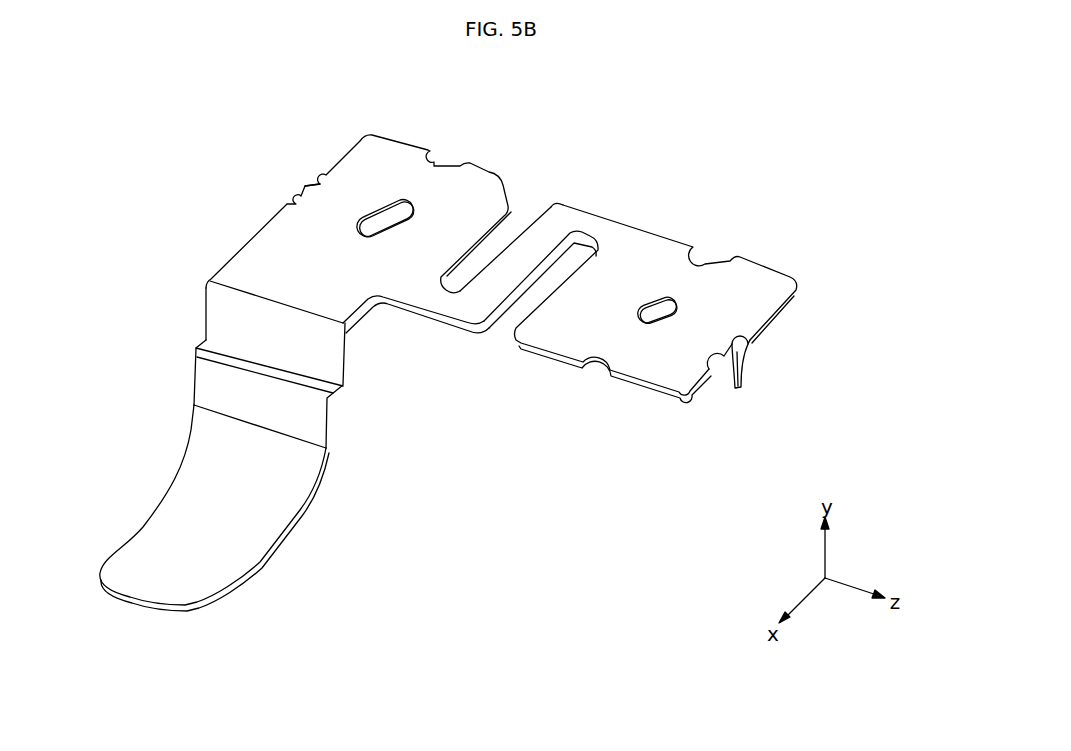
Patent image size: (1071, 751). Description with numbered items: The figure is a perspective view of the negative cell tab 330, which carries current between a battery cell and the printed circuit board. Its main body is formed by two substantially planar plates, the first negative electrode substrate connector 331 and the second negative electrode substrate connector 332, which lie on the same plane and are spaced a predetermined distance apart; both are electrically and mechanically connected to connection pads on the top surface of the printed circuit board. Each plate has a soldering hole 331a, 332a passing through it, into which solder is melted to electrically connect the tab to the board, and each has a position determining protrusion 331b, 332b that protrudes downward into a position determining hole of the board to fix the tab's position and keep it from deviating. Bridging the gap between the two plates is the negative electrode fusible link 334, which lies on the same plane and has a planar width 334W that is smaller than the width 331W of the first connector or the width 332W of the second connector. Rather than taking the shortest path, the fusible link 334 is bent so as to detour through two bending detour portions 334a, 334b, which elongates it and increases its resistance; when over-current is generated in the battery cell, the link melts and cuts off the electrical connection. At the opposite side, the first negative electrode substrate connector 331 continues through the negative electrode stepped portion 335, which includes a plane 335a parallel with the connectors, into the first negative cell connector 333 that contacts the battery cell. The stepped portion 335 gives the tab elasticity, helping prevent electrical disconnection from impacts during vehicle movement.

The negative cell tab 330 is at (860, 124).
The first negative electrode substrate connector 331 is at (356, 155).
The soldering hole 331a is at (357, 222).
The position determining protrusion 331b is at (296, 197).
The width of the first negative electrode substrate connector 331W is at (365, 136).
The second negative electrode substrate connector 332 is at (782, 313).
The soldering hole 332a is at (645, 320).
The position determining protrusion 332b is at (740, 372).
The width of the second negative electrode substrate connector 332W is at (600, 246).
The first negative cell connector 333 is at (133, 545).
The negative electrode fusible link 334 is at (503, 266).
The bending detour portion 334a is at (469, 330).
The bending detour portion 334b is at (555, 202).
The planar width of the negative electrode fusible link 334W is at (578, 232).
The negative electrode stepped portion 335 is at (195, 387).
The plane 335a is at (205, 348).